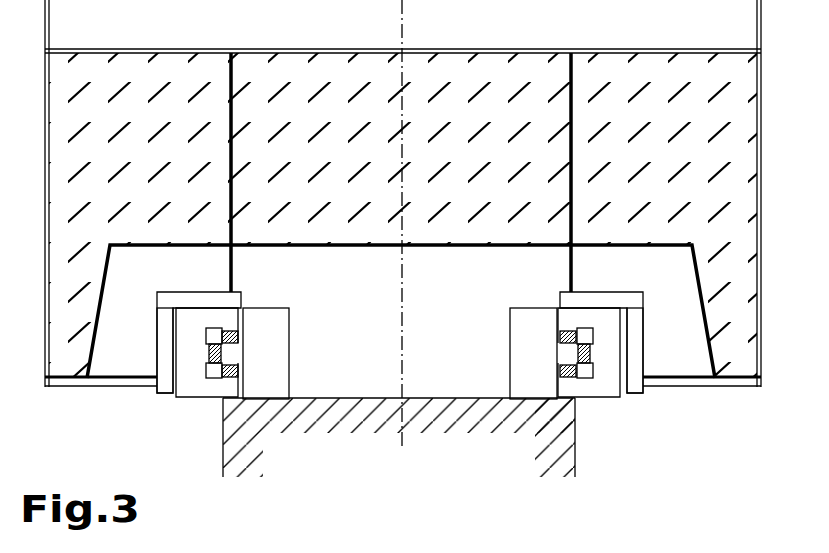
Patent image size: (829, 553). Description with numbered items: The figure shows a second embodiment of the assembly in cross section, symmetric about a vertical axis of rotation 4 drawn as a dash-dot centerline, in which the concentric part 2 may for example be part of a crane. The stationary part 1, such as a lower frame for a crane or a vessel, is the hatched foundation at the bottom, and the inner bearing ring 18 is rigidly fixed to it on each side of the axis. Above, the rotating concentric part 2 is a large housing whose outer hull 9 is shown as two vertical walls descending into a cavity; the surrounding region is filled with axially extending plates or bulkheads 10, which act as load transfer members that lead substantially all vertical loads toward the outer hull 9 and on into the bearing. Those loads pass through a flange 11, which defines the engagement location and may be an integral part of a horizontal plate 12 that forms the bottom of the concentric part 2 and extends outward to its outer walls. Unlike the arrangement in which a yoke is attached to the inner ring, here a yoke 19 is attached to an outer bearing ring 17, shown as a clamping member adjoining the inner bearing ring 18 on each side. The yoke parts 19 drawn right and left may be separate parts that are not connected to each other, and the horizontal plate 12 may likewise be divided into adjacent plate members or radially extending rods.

The vessel 1 is at (399, 441).
The turret 2 is at (360, 49).
The vertical axis of rotation 4 is at (404, 3).
The outer hull 9 is at (234, 260).
The plates or bulkheads 10 is at (143, 72).
The flange 11 is at (183, 300).
The horizontal plate 12 is at (108, 385).
The outer bearing ring 17 is at (200, 388).
The inner bearing ring 18 is at (289, 352).
The yoke 19 is at (165, 372).